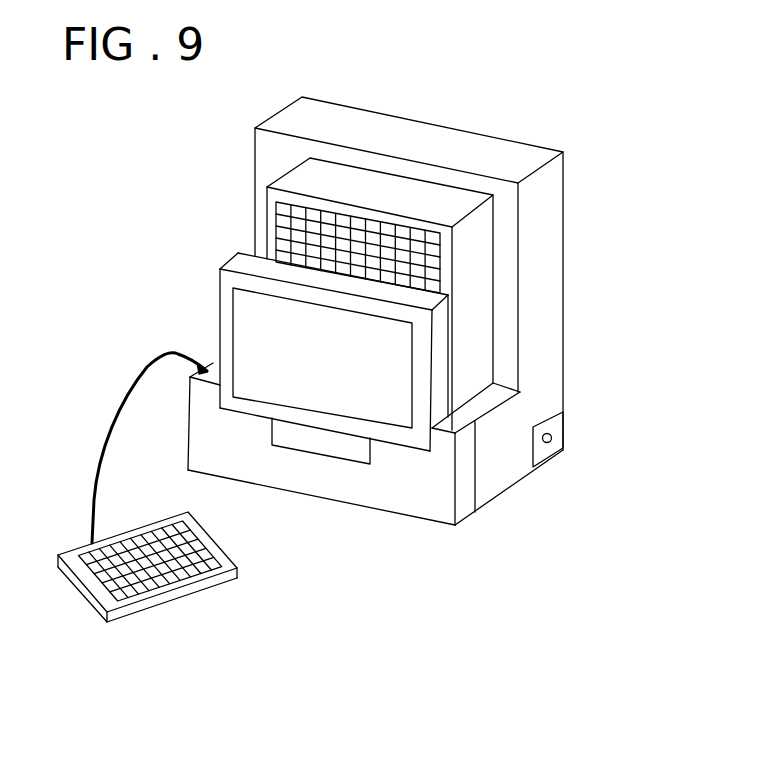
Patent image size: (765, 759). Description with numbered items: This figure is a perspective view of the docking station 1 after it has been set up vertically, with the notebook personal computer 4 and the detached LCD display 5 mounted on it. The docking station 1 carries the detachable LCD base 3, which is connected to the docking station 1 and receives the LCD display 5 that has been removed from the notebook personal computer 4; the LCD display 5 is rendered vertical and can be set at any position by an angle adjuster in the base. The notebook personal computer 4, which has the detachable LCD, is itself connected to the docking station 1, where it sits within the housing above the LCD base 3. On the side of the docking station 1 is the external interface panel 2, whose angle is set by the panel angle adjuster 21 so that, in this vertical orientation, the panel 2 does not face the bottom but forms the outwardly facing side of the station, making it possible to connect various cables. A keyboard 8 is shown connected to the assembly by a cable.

The docking station 1 is at (563, 248).
The external interface panel 2 is at (553, 427).
The panel angle adjuster 21 is at (551, 442).
The LCD base 3 is at (463, 505).
The notebook personal computer 4 is at (423, 200).
The LCD display 5 is at (373, 392).
The keyboard 8 is at (93, 603).